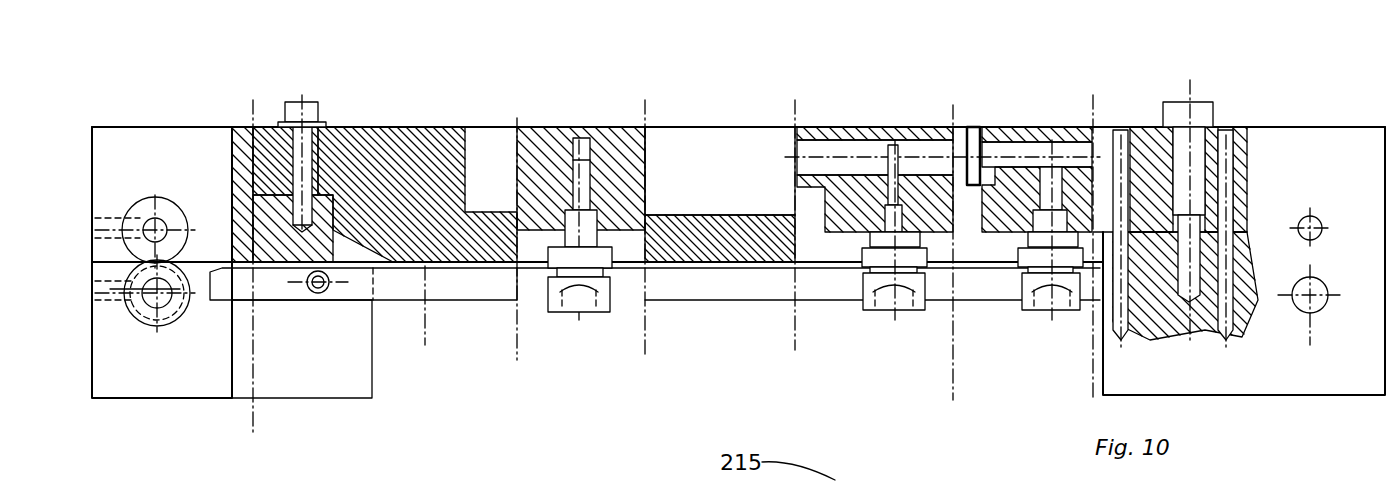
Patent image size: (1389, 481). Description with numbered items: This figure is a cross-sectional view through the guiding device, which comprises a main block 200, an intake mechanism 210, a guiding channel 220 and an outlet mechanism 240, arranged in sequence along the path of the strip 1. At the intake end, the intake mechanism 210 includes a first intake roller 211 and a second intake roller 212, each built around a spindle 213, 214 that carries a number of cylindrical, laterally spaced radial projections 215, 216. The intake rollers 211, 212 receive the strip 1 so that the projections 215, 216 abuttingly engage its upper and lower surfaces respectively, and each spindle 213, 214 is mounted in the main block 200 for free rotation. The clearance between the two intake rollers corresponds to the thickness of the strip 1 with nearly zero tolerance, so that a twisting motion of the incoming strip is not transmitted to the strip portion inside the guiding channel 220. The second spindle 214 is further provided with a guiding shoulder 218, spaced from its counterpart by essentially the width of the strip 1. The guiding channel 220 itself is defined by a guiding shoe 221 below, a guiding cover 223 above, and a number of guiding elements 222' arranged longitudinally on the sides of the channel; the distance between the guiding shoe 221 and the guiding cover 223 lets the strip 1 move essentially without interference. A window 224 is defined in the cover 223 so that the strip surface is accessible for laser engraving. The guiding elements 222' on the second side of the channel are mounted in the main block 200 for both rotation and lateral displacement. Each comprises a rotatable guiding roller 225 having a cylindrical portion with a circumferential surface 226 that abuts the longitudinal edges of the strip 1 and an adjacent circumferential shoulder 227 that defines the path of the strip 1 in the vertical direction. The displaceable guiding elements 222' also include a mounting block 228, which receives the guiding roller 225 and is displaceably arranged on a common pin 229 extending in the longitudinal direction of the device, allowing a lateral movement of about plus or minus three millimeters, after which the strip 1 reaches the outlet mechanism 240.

The strip 1 is at (92, 258).
The main block 200 is at (315, 378).
The intake mechanism 210 is at (198, 120).
The first intake roller 211 is at (162, 192).
The second intake roller 212 is at (160, 335).
The spindle 213 is at (176, 212).
The second spindle 214 is at (187, 298).
The radial projections 215 is at (140, 212).
The radial projections 216 is at (128, 318).
The guiding shoulder 218 is at (170, 318).
The guiding channel 220 is at (599, 120).
The guiding shoe 221 is at (445, 286).
The displaceable guiding elements 222' is at (810, 255).
The guiding cover 223 is at (400, 150).
The window 224 is at (740, 160).
The guiding roller 225 is at (594, 312).
The circumferential surface 226 is at (520, 292).
The circumferential shoulder 227 is at (615, 268).
The mounting block 228 is at (638, 155).
The common pin 229 is at (846, 155).
The outlet mechanism 240 is at (1303, 126).